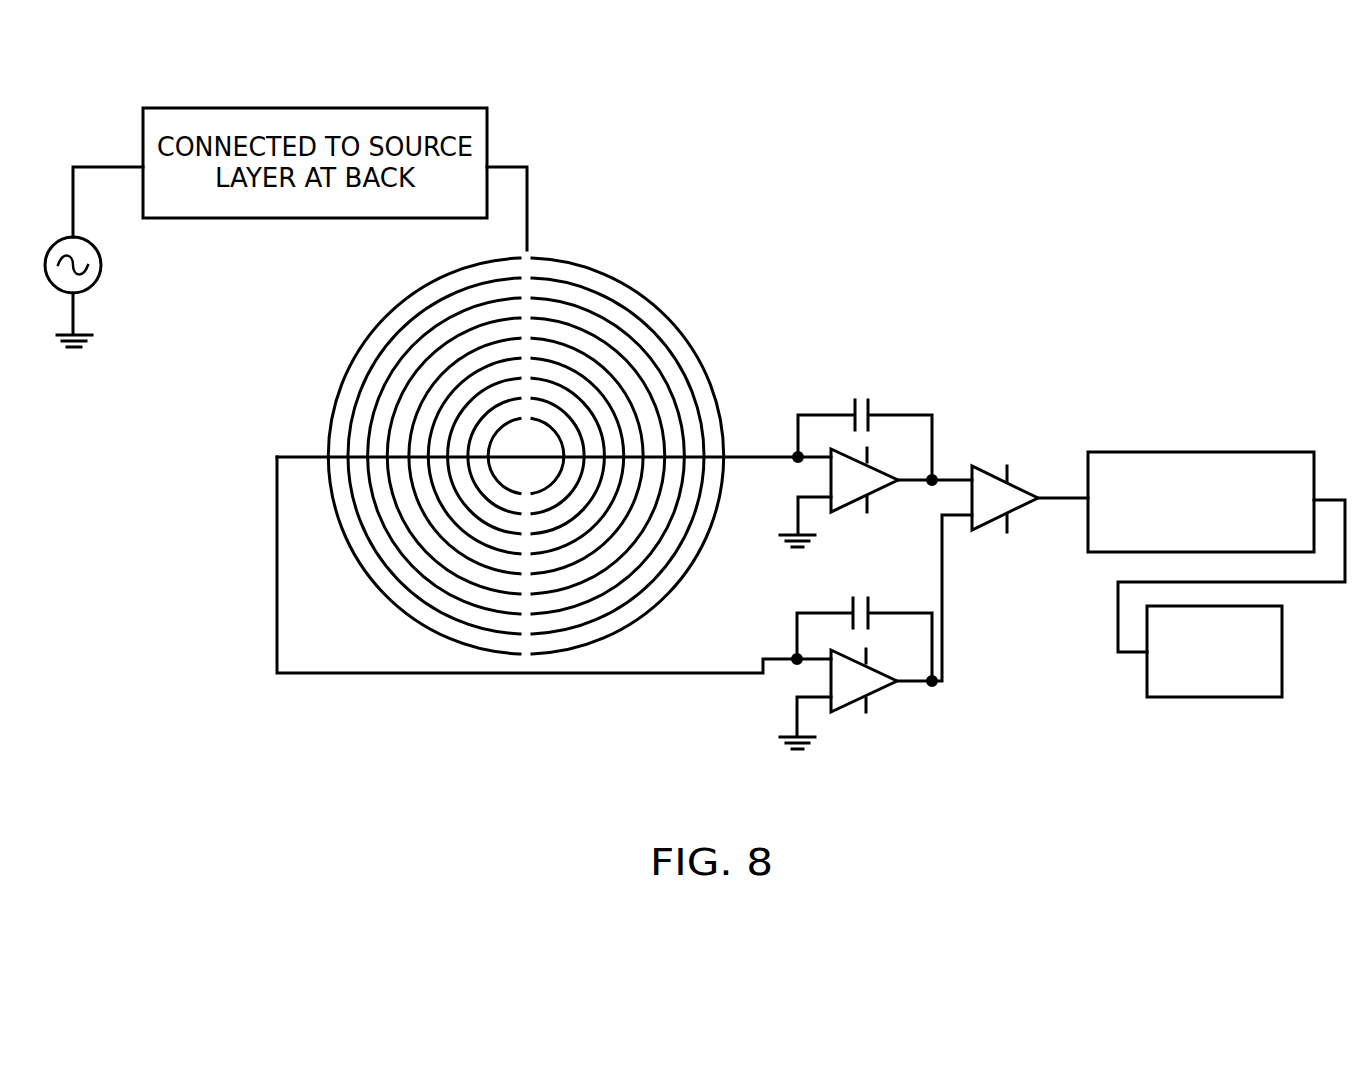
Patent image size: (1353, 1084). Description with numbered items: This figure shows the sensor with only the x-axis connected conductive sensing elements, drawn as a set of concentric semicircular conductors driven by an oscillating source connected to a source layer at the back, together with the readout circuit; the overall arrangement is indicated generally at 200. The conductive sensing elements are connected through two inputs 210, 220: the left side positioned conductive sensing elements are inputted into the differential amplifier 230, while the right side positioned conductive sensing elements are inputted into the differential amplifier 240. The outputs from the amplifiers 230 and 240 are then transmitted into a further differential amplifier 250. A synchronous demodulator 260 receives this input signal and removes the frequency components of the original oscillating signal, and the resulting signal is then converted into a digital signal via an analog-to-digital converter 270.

The capacitive sensing system 200 is at (957, 308).
The first sensor electrode connection 210 is at (275, 452).
The second sensor electrode connection 220 is at (743, 457).
The differential amplifier 230 is at (843, 698).
The differential amplifier 240 is at (845, 495).
The differential amplifier 250 is at (980, 527).
The synchronous demodulator 260 is at (1203, 452).
The analog-to-digital converter 270 is at (1147, 678).